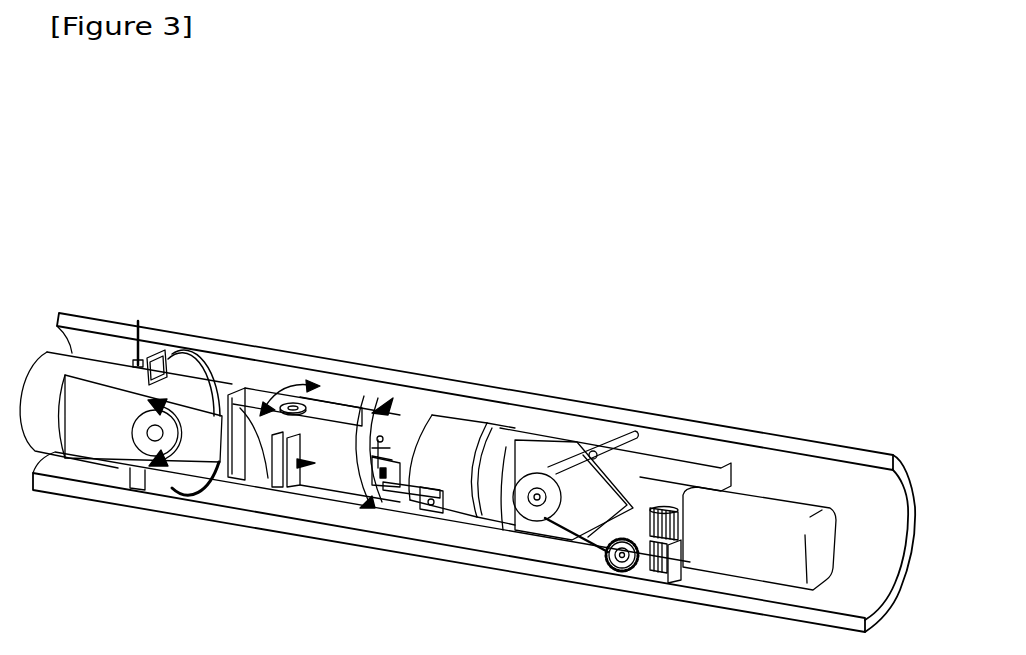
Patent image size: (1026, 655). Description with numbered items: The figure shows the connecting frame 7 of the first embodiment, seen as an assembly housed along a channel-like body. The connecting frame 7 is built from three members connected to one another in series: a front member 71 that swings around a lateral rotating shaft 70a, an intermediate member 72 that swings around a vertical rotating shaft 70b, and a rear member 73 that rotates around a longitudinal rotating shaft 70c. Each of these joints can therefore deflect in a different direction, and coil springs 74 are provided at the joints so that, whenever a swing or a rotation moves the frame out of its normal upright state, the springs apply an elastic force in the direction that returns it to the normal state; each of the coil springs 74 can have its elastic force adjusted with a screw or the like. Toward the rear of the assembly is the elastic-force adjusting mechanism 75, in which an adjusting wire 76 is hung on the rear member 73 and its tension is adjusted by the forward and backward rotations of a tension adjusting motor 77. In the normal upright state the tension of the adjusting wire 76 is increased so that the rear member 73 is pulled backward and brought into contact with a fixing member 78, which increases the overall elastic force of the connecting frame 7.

The connecting frame 7 is at (826, 262).
The front member 71 is at (103, 360).
The lateral rotating shaft 70a is at (147, 436).
The vertical rotating shaft 70b is at (284, 404).
The longitudinal rotating shaft 70c is at (401, 457).
The intermediate member 72 is at (377, 488).
The rear member 73 is at (488, 425).
The coil springs 74 is at (173, 350).
The elastic-force adjusting mechanism 75 is at (782, 393).
The adjusting wire 76 is at (543, 468).
The tension adjusting motor 77 is at (762, 493).
The fixing member 78 is at (679, 455).